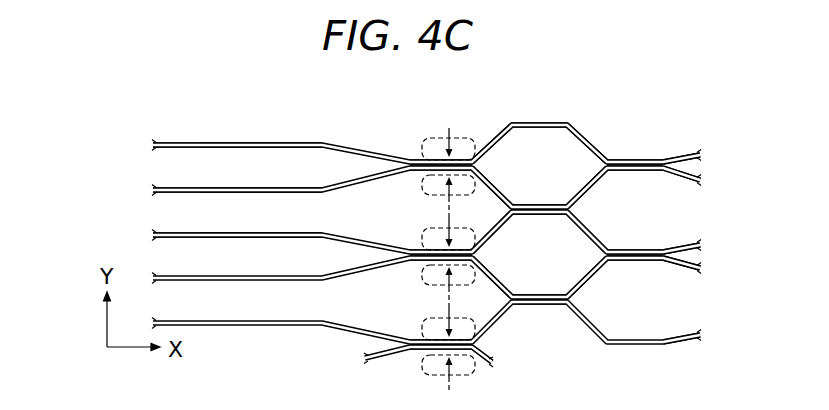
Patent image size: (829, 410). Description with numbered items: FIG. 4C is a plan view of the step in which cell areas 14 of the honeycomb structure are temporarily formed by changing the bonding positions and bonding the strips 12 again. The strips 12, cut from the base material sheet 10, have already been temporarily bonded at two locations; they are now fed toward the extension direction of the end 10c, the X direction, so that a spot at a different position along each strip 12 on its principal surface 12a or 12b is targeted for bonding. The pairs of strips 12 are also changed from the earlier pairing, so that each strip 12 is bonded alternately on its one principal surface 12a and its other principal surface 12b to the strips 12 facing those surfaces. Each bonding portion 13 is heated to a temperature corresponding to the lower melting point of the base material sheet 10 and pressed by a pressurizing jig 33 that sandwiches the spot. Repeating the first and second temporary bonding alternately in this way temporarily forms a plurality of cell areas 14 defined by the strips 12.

The base material sheet 10 is at (74, 235).
The end 10c is at (767, 237).
The strip 12 is at (327, 141).
The principal surface 12a is at (235, 141).
The principal surface 12b is at (244, 149).
The bonding portion 13 is at (442, 162).
The cell area 14 is at (548, 158).
The pressurizing jig 33 is at (465, 137).